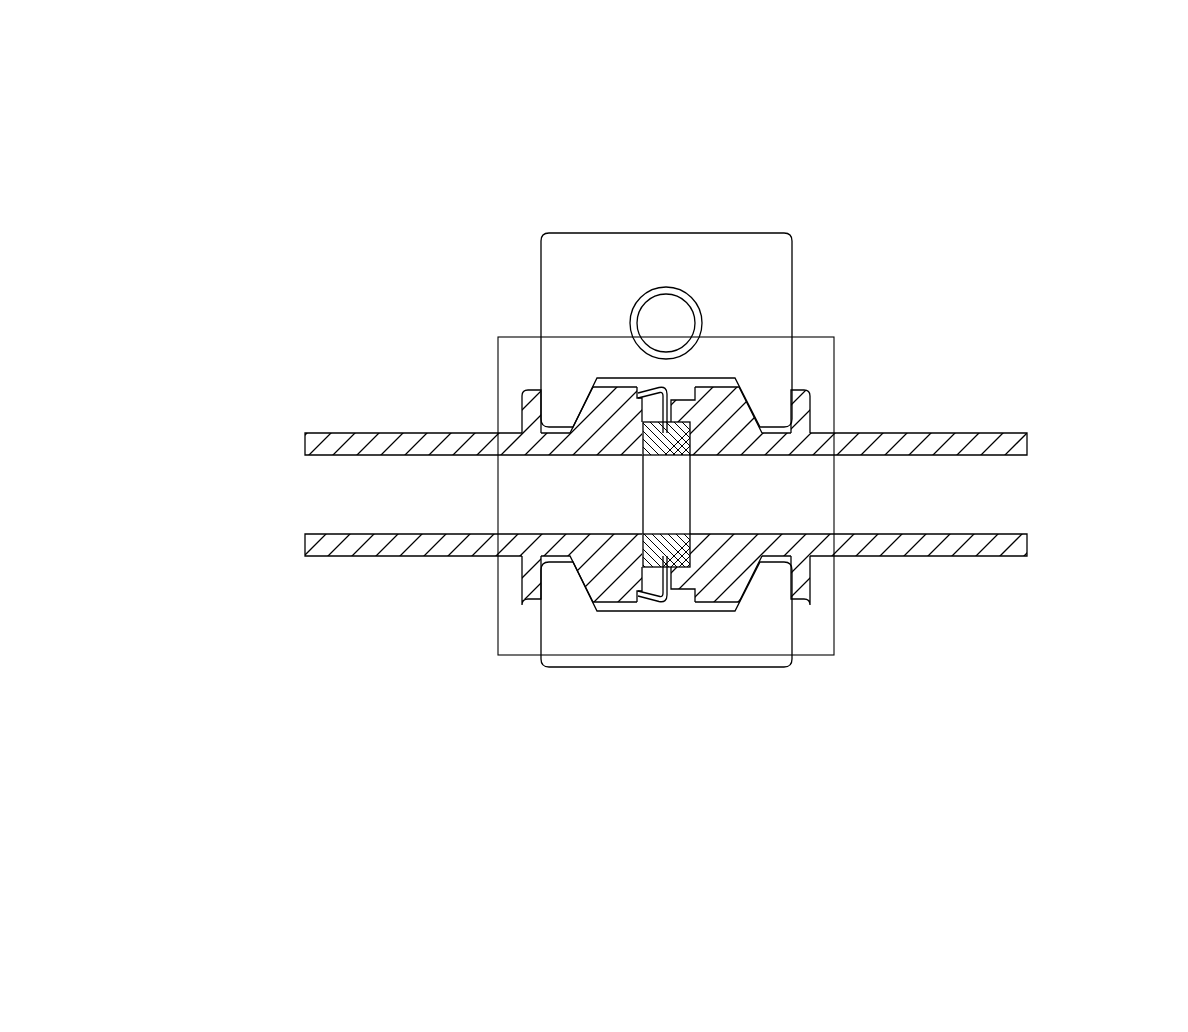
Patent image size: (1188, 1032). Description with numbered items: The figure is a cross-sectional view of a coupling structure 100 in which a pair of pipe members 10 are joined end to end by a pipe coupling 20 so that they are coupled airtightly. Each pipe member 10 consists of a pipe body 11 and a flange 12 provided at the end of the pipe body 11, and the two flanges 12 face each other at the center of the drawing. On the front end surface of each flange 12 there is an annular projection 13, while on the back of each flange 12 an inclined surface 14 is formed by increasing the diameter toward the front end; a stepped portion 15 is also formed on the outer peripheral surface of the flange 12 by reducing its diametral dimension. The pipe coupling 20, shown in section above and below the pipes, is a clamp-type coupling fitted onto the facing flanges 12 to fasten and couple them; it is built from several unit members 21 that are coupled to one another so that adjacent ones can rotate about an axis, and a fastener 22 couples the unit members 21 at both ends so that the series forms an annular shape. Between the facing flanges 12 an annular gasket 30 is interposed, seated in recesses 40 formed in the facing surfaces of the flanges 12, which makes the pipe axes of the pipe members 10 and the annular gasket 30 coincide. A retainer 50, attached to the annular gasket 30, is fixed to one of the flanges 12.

The coupling structure 100 is at (316, 123).
The pipe member 10 is at (286, 404).
The pipe body 11 is at (347, 557).
The flange 12 is at (615, 603).
The annular projection 13 is at (648, 432).
The inclined surface 14 is at (578, 587).
The stepped portion 15 is at (653, 603).
The pipe coupling 20 is at (664, 233).
The unit member 21 is at (541, 265).
The fastener 22 is at (702, 323).
The annular gasket 30 is at (633, 425).
The recess 40 is at (646, 462).
The retainer 50 is at (668, 415).